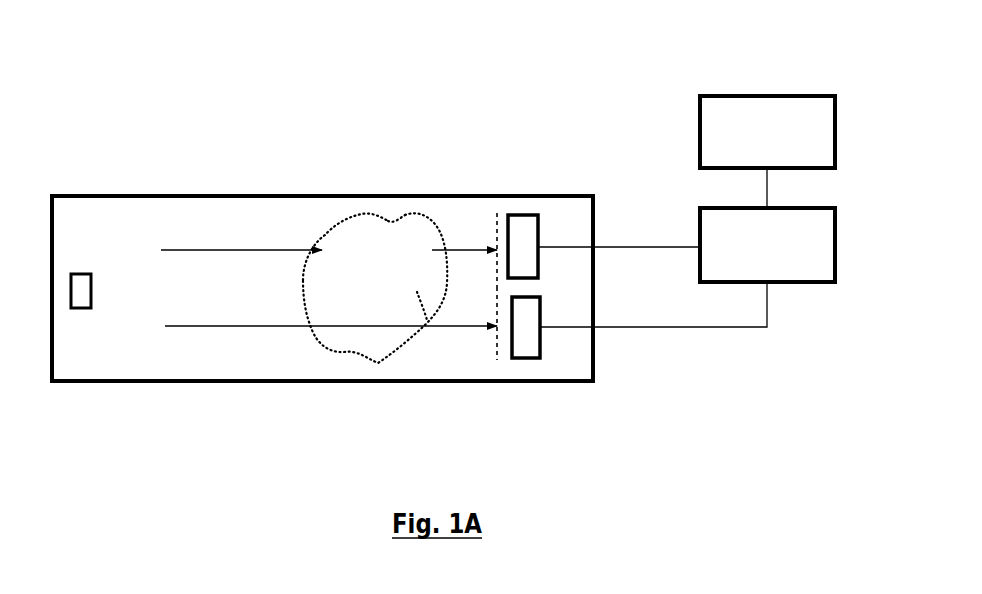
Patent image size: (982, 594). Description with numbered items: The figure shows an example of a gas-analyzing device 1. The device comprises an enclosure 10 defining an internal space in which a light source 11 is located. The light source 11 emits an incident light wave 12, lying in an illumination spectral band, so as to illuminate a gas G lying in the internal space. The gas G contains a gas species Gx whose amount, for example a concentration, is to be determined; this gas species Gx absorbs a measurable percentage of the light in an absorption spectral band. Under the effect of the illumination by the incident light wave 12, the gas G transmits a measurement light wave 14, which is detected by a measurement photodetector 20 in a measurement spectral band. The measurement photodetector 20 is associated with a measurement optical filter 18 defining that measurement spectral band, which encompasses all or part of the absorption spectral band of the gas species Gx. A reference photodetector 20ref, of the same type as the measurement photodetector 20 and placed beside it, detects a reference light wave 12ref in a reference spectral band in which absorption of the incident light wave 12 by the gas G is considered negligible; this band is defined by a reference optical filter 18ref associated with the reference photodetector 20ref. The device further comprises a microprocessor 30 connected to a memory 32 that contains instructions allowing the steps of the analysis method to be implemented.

The gas-analyzing device 1 is at (110, 167).
The enclosure 10 is at (313, 384).
The light source 11 is at (81, 318).
The incident light wave 12 is at (296, 248).
The reference light wave 12ref is at (189, 334).
The gas G is at (359, 244).
The gas species Gx is at (391, 228).
The measurement light wave 14 is at (451, 245).
The measurement optical filter 18 is at (491, 207).
The reference optical filter 18ref is at (501, 361).
The measurement photodetector 20 is at (524, 208).
The reference photodetector 20ref is at (528, 336).
The microprocessor 30 is at (754, 249).
The memory 32 is at (759, 128).